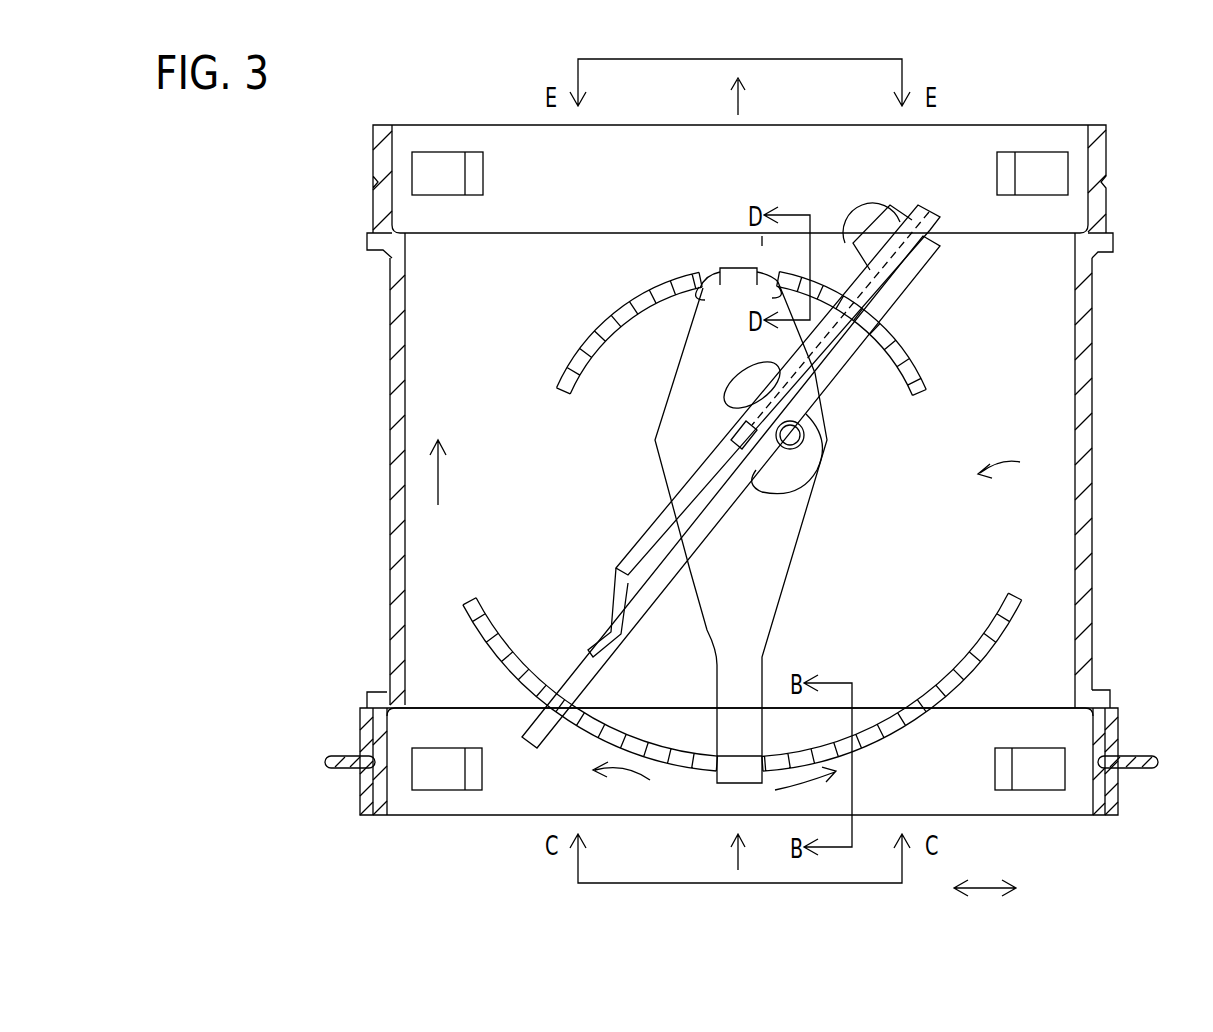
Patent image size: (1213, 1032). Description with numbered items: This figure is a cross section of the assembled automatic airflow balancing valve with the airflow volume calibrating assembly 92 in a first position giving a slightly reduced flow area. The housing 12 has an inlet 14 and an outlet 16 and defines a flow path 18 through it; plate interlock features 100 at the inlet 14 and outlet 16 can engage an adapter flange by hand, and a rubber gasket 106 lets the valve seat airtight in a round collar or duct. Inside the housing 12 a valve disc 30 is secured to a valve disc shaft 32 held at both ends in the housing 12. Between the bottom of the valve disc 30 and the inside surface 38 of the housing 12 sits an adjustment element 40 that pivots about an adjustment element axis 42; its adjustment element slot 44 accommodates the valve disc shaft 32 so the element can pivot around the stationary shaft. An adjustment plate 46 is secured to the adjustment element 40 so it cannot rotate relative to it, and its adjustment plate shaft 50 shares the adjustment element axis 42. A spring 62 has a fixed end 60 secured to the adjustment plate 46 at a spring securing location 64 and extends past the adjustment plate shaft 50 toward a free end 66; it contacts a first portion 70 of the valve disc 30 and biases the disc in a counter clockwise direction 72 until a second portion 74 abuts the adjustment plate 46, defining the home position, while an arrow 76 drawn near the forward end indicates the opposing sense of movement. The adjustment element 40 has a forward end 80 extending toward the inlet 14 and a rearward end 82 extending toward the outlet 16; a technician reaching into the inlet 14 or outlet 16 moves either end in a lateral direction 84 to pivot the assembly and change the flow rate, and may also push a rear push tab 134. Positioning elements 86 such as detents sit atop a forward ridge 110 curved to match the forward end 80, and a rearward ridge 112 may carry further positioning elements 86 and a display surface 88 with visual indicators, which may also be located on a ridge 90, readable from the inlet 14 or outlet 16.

The housing 12 is at (1092, 460).
The inlet 14 is at (510, 818).
The outlet 16 is at (958, 125).
The flow path 18 is at (462, 472).
The valve disc 30 is at (743, 453).
The valve disc shaft 32 is at (802, 440).
The inside surface 38 is at (983, 546).
The adjustment element 40 is at (752, 590).
The adjustment element axis 42 is at (740, 430).
The adjustment element slot 44 is at (808, 475).
The adjustment plate 46 is at (908, 270).
The adjustment plate shaft 50 is at (738, 437).
The fixed end 60 is at (920, 205).
The spring securing location 64 is at (840, 291).
The spring 62 is at (750, 431).
The free end 66 is at (610, 625).
The first portion 70 is at (738, 492).
The counter clockwise direction 72 is at (790, 792).
The second portion 74 is at (900, 305).
The rotation arrow 76 is at (607, 788).
The forward end 80 is at (720, 750).
The rearward end 82 is at (710, 280).
The lateral direction 84 is at (985, 880).
The positioning elements 86 is at (749, 522).
The display surface 88 is at (749, 522).
The ridge 90 is at (749, 522).
The airflow volume calibrating assembly 92 is at (1013, 461).
The plate interlock features 100 is at (441, 170).
The rubber gasket 106 is at (340, 755).
The forward ridge 110 is at (742, 682).
The rearward ridge 112 is at (606, 350).
The rear push tab 134 is at (738, 275).